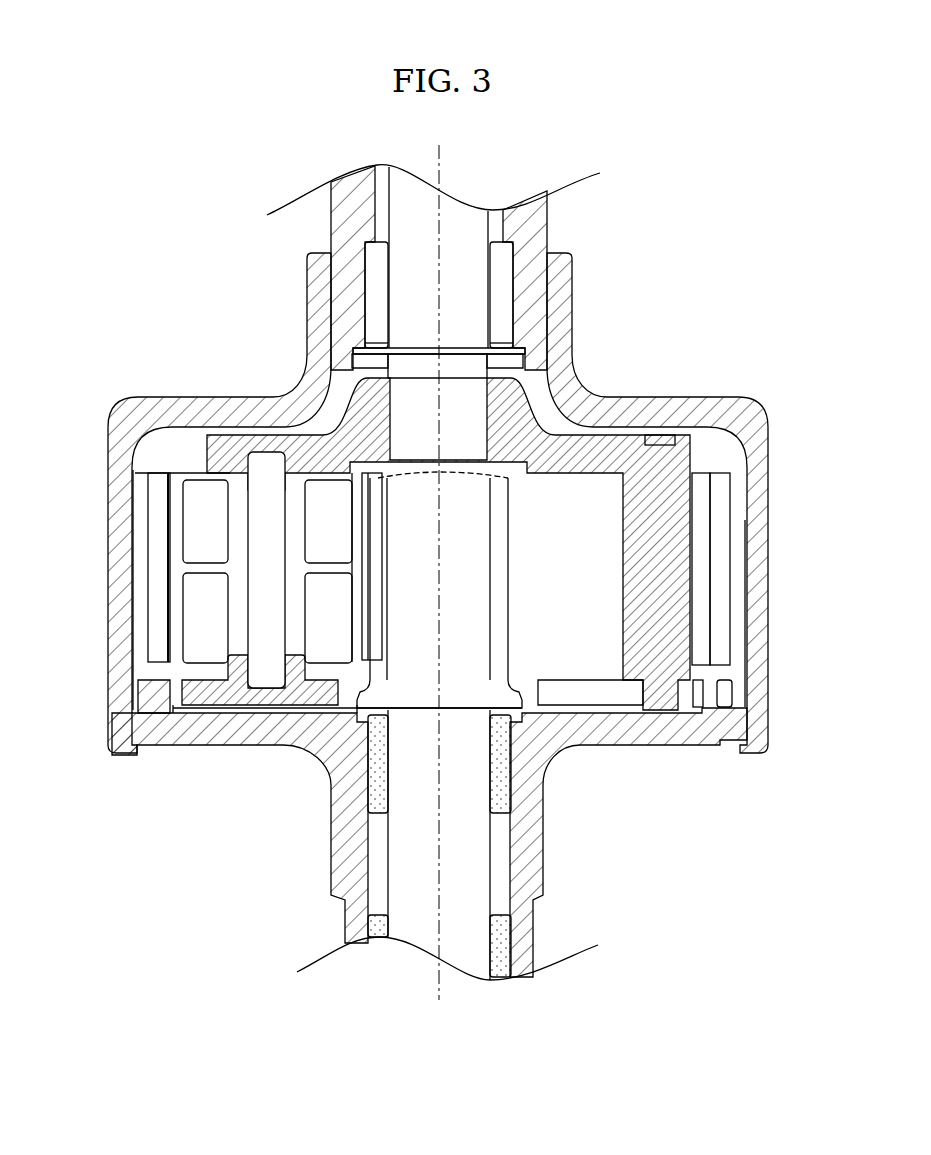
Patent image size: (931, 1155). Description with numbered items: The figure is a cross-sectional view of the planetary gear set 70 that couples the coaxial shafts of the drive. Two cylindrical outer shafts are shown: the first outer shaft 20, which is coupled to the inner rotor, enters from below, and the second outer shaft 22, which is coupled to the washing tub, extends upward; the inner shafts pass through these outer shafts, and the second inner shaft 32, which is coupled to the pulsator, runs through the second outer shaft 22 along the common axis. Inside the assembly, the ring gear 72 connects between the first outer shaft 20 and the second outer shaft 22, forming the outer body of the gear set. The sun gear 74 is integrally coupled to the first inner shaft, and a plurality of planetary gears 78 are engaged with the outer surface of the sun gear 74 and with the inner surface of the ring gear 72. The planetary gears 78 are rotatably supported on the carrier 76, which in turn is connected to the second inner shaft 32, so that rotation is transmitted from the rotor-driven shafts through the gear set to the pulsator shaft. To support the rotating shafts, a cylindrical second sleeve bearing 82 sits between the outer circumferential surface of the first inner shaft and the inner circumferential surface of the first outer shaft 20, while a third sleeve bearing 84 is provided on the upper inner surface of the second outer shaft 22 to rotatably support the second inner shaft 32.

The first outer shaft 20 is at (342, 847).
The second outer shaft 22 is at (528, 227).
The second inner shaft 32 is at (410, 287).
The planetary gear set 70 is at (437, 503).
The ring gear 72 is at (750, 418).
The sun gear 74 is at (468, 538).
The carrier 76 is at (603, 450).
The planetary gears 78 is at (210, 560).
The second sleeve bearing 82 is at (367, 773).
The third sleeve bearing 84 is at (503, 287).